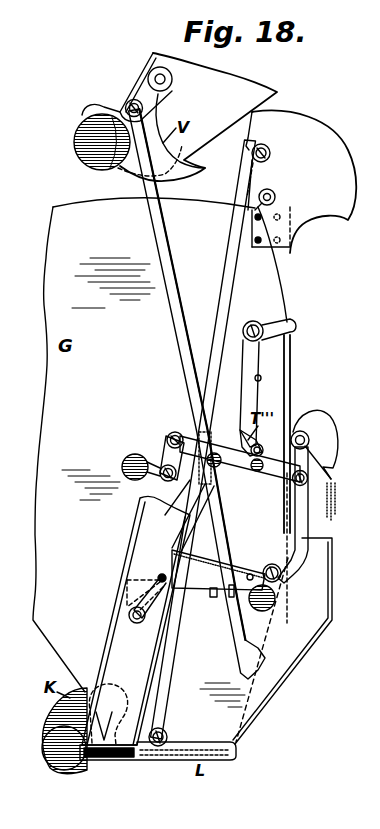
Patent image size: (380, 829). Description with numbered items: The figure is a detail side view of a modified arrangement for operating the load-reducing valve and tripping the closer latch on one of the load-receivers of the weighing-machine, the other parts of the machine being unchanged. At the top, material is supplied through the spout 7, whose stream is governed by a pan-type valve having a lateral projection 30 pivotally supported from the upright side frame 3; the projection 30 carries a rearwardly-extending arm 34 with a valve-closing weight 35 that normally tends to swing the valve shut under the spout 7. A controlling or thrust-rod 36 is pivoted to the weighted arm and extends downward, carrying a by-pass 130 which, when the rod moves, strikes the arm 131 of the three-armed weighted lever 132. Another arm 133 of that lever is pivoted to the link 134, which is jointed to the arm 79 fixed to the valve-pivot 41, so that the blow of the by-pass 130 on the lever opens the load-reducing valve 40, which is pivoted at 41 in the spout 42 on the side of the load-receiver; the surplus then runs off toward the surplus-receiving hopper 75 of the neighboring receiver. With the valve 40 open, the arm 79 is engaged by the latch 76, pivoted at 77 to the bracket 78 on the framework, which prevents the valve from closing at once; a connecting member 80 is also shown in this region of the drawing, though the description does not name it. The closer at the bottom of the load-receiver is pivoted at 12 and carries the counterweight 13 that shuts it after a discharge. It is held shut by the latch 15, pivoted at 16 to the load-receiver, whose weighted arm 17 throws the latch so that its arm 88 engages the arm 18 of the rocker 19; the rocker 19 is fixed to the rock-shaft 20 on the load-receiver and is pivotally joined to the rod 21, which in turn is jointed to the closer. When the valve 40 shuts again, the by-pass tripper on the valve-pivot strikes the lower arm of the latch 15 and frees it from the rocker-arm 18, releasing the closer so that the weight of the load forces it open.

The side frame 3 is at (128, 559).
The spout 7 is at (179, 117).
The closer pivot 12 is at (105, 722).
The counterweight 13 is at (44, 756).
The latch 15 is at (229, 447).
The latch pivot 16 is at (244, 327).
The latch arm 17 is at (246, 353).
The rocker arm 18 is at (287, 270).
The rocker 19 is at (301, 182).
The rock-shaft 20 is at (276, 196).
The rod 21 is at (232, 258).
The lateral projection 30 is at (150, 72).
The rearwardly-extending arm 34 is at (140, 94).
The valve-closing weight 35 is at (74, 150).
The controlling-rod (thrust-rod) 36 is at (161, 301).
The load-reducing valve 40 is at (323, 423).
The valve-pivot 41 is at (304, 430).
The spout 42 is at (316, 470).
The surplus-receiving hopper 75 is at (333, 562).
The latch 76 is at (275, 597).
The latch pivot 77 is at (270, 565).
The bracket 78 is at (220, 578).
The arm 79 is at (284, 528).
The link 80 is at (298, 516).
The latch arm 88 is at (275, 325).
The by-pass 130 is at (215, 470).
The lever arm 131 is at (185, 482).
The three-armed weighted lever 132 is at (134, 460).
The lever arm 133 is at (170, 445).
The link 134 is at (238, 462).